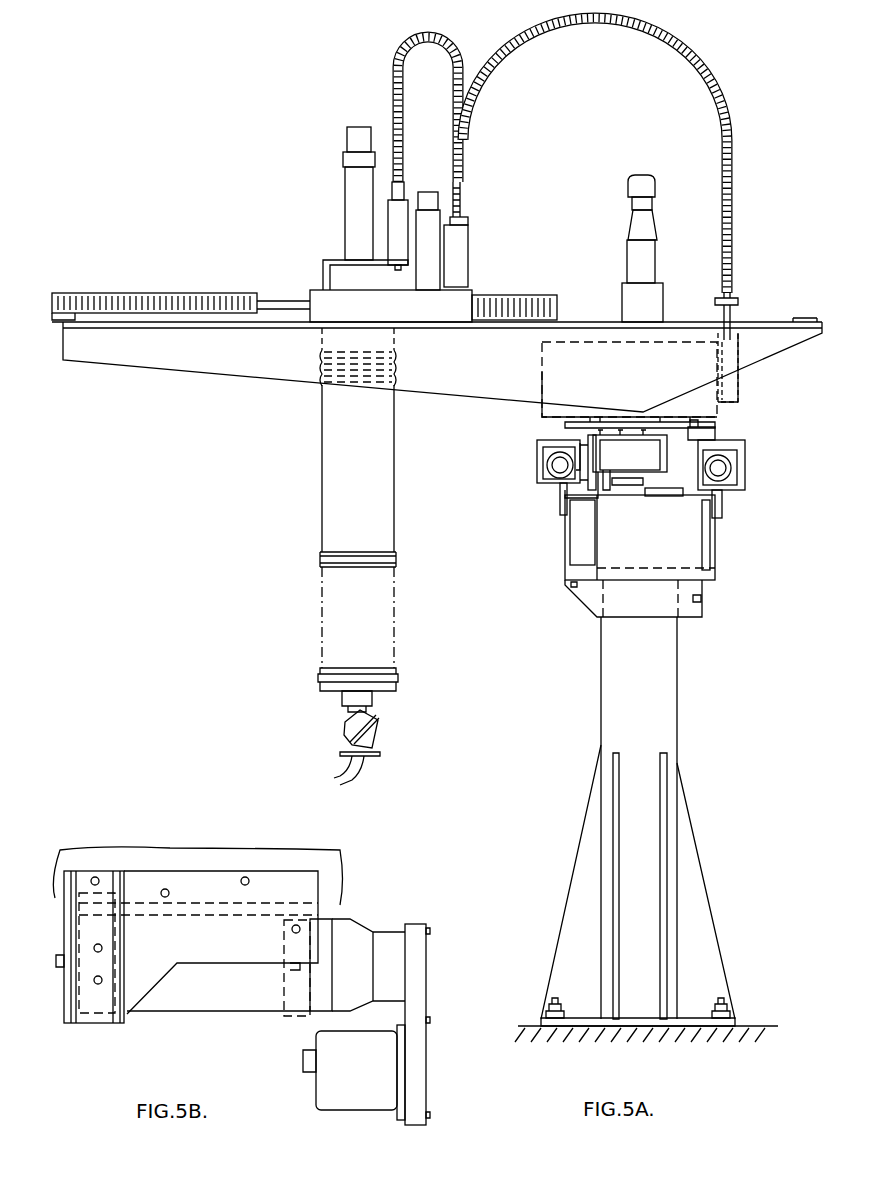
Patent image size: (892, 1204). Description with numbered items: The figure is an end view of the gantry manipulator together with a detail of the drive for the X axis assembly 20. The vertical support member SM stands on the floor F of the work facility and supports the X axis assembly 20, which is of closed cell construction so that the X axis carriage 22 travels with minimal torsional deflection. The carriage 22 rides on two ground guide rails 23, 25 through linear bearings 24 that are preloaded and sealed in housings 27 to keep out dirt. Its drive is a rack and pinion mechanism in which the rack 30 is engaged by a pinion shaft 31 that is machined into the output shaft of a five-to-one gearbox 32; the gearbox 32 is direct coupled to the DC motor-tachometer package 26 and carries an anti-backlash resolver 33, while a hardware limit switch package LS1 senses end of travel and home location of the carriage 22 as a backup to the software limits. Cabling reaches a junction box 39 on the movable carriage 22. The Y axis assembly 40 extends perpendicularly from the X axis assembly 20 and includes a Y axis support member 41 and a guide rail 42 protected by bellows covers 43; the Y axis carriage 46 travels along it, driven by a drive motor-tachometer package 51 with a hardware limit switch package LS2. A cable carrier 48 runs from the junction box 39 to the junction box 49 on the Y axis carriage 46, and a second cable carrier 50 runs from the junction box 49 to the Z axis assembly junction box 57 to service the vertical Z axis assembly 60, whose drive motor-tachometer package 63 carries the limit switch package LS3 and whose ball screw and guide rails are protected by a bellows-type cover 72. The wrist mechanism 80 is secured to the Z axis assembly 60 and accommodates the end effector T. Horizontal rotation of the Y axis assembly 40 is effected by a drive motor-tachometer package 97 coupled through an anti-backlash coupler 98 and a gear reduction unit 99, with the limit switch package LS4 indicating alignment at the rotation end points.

In FIG. 5A, the X axis assembly 20 is at (766, 526).
In FIG. 5A, the X axis carriage 22 is at (738, 440).
In FIG. 5A, the guide rail 23 is at (722, 468).
In FIG. 5A, the linear bearings 24 is at (560, 478).
In FIG. 5A, the guide rail 25 is at (556, 466).
In FIG. 5A, the DC motor-tachometer package 26 is at (633, 438).
In FIG. 5B, the DC motor-tachometer package 26 is at (235, 1000).
In FIG. 5A, the housings 27 is at (537, 456).
In FIG. 5A, the rack 30 is at (592, 500).
In FIG. 5A, the pinion shaft 31 is at (580, 472).
In FIG. 5A, the gearbox 32 is at (588, 445).
In FIG. 5B, the gearbox 32 is at (97, 1003).
In FIG. 5A, the anti-backlash resolver 33 is at (625, 486).
In FIG. 5A, the junction box 39 is at (738, 392).
In FIG. 5A, the Y axis assembly 40 is at (544, 284).
In FIG. 5A, the Y axis support member 41 is at (205, 362).
In FIG. 5A, the guide rail 42 is at (287, 300).
In FIG. 5A, the bellows covers 43 is at (178, 293).
In FIG. 5A, the Y axis carriage 46 is at (460, 290).
In FIG. 5A, the cable carrier 48 is at (700, 70).
In FIG. 5A, the junction box 49 is at (470, 245).
In FIG. 5A, the cable carrier 50 is at (428, 32).
In FIG. 5A, the drive motor-tachometer package 51 is at (460, 222).
In FIG. 5A, the Z axis assembly junction box 57 is at (408, 200).
In FIG. 5A, the Z axis assembly 60 is at (329, 220).
In FIG. 5A, the drive motor-tachometer package 63 is at (345, 178).
In FIG. 5A, the bellows-type cover 72 is at (322, 503).
In FIG. 5A, the wrist mechanism 80 is at (375, 730).
In FIG. 5A, the drive motor-tachometer package 97 is at (650, 228).
In FIG. 5A, the anti-backlash coupler 98 is at (648, 260).
In FIG. 5A, the gear reduction unit 99 is at (648, 302).
In FIG. 5A, the hardware limit switch package LS1 is at (675, 490).
In FIG. 5B, the hardware limit switch package LS1 is at (372, 1092).
In FIG. 5A, the hardware limit switch package LS2 is at (440, 196).
In FIG. 5A, the hardware limit switch package LS3 is at (357, 138).
In FIG. 5A, the limit switch package LS4 is at (650, 183).
In FIG. 5A, the vertical support members SM is at (668, 706).
In FIG. 5A, the end effector T is at (360, 776).
In FIG. 5A, the floor F is at (745, 1025).